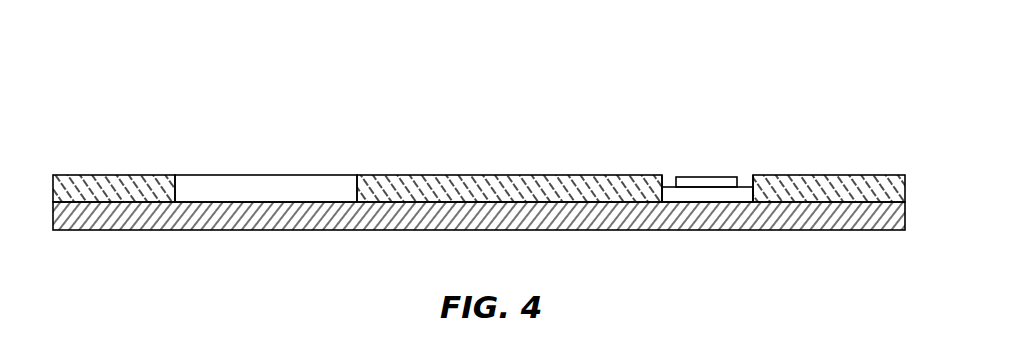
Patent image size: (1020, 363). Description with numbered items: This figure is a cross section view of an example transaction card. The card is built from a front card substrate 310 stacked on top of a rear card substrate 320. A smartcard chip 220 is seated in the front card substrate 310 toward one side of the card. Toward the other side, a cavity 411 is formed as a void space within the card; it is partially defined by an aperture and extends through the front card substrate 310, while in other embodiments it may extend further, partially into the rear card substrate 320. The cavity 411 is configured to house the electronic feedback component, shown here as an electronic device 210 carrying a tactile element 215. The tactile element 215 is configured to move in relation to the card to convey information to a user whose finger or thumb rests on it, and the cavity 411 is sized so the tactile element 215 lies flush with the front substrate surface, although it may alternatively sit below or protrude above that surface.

The electronic device 210 is at (692, 166).
The tactile element 215 is at (731, 175).
The smartcard chip 220 is at (282, 174).
The front card substrate 310 is at (842, 174).
The rear card substrate 320 is at (878, 230).
The cavity 411 is at (668, 177).